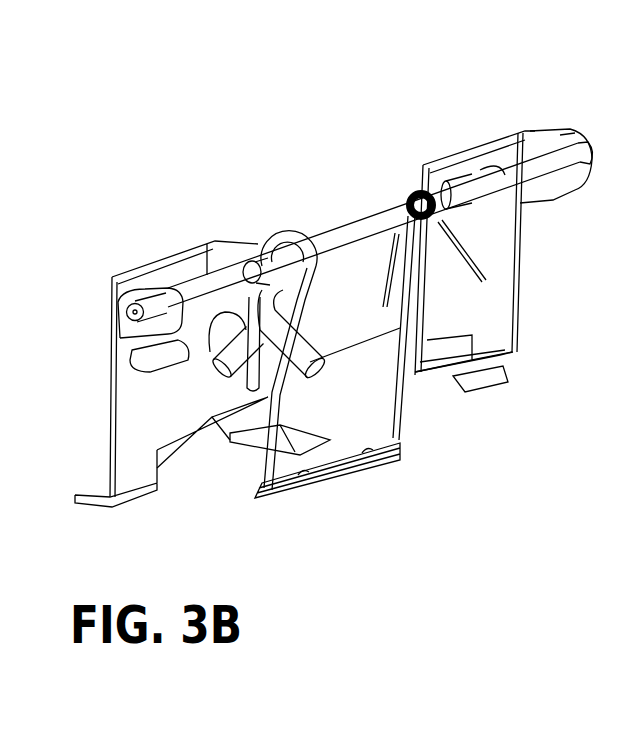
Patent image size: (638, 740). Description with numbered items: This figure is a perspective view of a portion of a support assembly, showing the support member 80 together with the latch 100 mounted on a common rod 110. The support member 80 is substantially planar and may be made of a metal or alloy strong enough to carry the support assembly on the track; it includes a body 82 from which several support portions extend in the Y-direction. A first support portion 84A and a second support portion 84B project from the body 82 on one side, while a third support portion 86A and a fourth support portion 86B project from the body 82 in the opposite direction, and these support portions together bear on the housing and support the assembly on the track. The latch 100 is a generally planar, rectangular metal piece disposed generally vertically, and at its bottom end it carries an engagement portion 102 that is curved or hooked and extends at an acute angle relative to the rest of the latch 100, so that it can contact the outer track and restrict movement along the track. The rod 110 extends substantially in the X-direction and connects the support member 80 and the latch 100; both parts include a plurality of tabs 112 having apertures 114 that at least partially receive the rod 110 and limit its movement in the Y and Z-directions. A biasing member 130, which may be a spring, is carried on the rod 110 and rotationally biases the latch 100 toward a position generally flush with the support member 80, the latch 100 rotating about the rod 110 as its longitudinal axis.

The support member 80 is at (96, 392).
The body 82 is at (500, 284).
The first support portion 84A is at (298, 443).
The second support portion 84B is at (482, 387).
The third support portion 86A is at (102, 497).
The fourth support portion 86B is at (505, 365).
The latch 100 is at (363, 420).
The engagement portion 102 is at (266, 497).
The rod 110 is at (337, 233).
The tabs 112 is at (137, 296).
The apertures 114 is at (147, 334).
The biasing member 130 is at (412, 195).